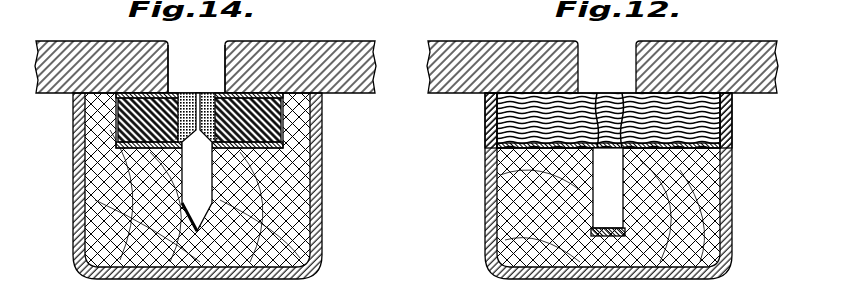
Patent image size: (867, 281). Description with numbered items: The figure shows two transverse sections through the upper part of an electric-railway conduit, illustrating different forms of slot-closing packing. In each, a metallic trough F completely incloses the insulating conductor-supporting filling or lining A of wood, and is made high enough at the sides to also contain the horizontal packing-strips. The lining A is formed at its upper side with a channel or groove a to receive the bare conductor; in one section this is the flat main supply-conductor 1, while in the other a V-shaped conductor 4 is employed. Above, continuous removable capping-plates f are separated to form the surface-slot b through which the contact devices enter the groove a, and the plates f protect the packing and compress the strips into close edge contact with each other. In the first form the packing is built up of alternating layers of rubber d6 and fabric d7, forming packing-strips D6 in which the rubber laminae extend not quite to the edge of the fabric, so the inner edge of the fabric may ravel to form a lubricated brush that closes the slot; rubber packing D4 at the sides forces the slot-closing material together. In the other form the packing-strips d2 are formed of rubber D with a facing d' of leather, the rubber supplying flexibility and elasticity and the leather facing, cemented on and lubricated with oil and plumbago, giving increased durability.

In FIG. 14, the capping-plates f is at (101, 50).
In FIG. 12, the capping-plates f is at (539, 52).
In FIG. 14, the surface-slot b is at (196, 67).
In FIG. 14, the metallic trough F is at (322, 212).
In FIG. 12, the metallic trough F is at (732, 239).
In FIG. 14, the conductor-supporting filling or lining A is at (105, 213).
In FIG. 12, the conductor-supporting filling or lining A is at (507, 220).
In FIG. 14, the rubber D is at (114, 120).
In FIG. 14, the packing-strips d2 is at (178, 93).
In FIG. 14, the leather facing d' is at (199, 156).
In FIG. 14, the channel or groove a is at (197, 162).
In FIG. 12, the channel or groove a is at (608, 188).
In FIG. 14, the V-shaped conductor 4 is at (191, 215).
In FIG. 12, the packing-strips D6 is at (599, 93).
In FIG. 12, the rubber packing D4 is at (608, 120).
In FIG. 12, the fabric layers d7 is at (722, 142).
In FIG. 12, the rubber layers d6 is at (727, 152).
In FIG. 12, the main supply-conductor 1 is at (608, 220).